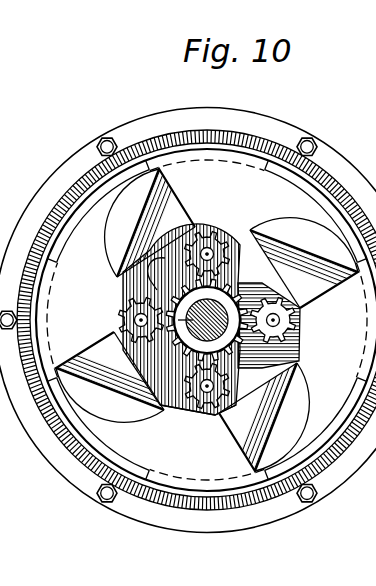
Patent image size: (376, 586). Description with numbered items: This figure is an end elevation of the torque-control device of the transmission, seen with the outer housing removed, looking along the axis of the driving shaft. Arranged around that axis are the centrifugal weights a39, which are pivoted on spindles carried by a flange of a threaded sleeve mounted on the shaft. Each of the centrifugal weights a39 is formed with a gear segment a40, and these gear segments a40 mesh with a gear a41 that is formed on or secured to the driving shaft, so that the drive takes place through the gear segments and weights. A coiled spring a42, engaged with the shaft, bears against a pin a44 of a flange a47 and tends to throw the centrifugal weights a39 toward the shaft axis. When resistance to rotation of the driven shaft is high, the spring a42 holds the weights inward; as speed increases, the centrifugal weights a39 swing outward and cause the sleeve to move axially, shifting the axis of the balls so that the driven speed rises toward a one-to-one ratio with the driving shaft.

The centrifugal weights a39 is at (207, 320).
The gear segments a40 is at (232, 230).
The gear a41 is at (288, 325).
The coiled spring a42 is at (145, 272).
The pin a44 is at (152, 283).
The flange a47 is at (171, 408).